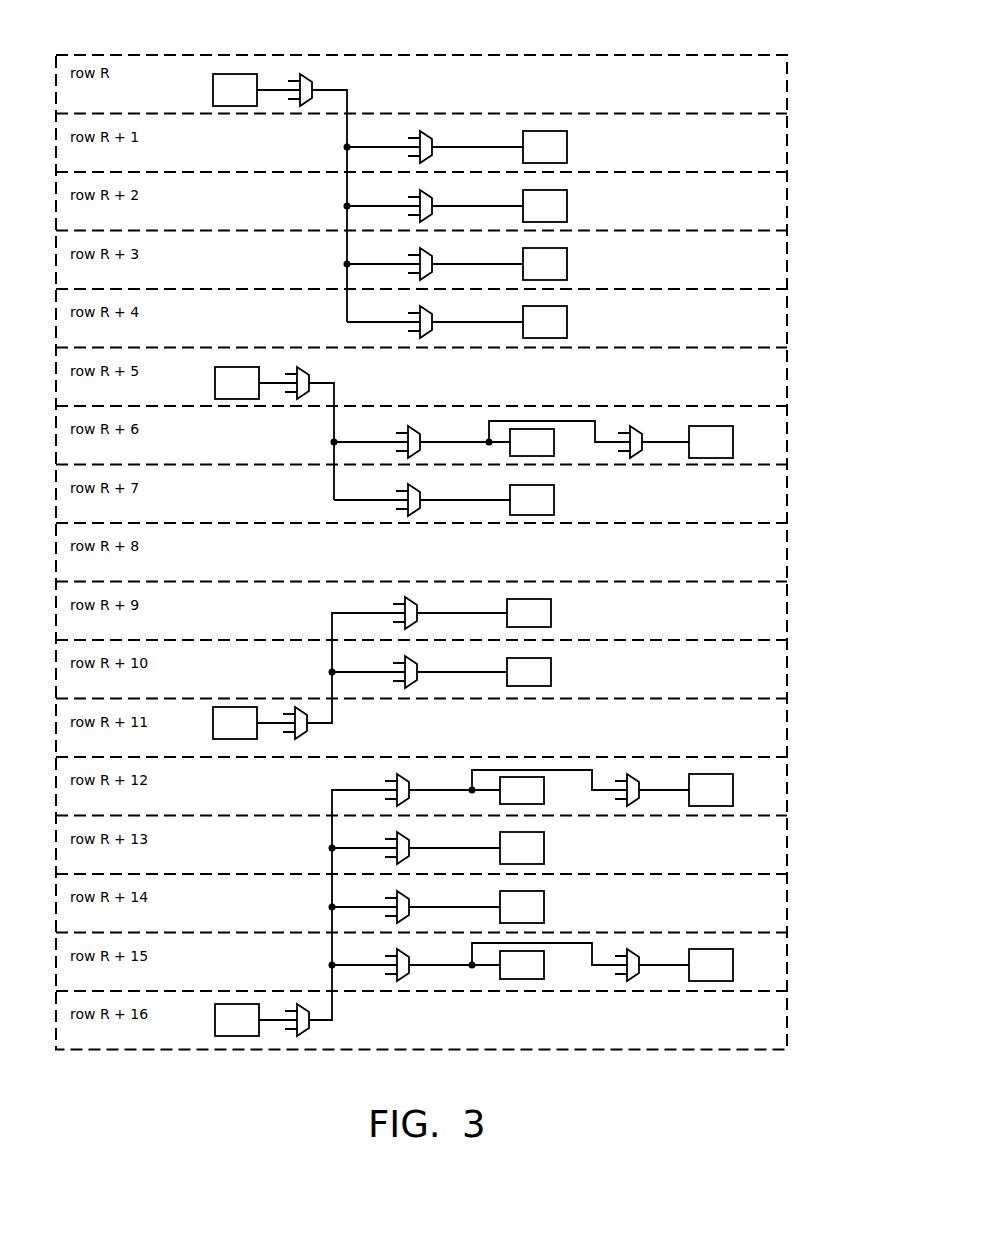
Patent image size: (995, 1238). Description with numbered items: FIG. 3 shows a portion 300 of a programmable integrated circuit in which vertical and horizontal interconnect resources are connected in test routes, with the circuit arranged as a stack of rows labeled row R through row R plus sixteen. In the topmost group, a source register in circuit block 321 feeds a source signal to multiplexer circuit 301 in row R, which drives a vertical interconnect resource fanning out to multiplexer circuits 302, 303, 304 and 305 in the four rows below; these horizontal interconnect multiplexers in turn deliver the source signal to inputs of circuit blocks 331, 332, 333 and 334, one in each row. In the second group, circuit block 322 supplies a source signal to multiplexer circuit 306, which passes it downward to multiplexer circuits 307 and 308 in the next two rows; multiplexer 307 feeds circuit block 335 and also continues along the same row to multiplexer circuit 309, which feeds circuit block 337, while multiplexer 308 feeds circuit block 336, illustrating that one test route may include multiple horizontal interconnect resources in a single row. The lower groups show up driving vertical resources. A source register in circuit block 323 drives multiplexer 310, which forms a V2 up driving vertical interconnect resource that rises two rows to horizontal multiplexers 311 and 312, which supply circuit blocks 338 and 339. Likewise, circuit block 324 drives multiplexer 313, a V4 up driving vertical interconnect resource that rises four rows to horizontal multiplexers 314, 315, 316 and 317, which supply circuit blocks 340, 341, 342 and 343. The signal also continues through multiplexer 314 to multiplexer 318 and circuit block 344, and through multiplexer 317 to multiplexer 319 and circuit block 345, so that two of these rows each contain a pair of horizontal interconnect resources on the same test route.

The portion of a programmable integrated circuit 300 is at (710, 54).
The multiplexer circuit 301 is at (305, 77).
The multiplexer circuit 302 is at (425, 134).
The multiplexer circuit 303 is at (425, 193).
The multiplexer circuit 304 is at (425, 251).
The multiplexer circuit 305 is at (425, 309).
The multiplexer circuit 306 is at (302, 370).
The multiplexer circuit 307 is at (413, 429).
The multiplexer circuit 308 is at (413, 487).
The multiplexer circuit 309 is at (635, 429).
The multiplexer 310 is at (303, 737).
The multiplexer 311 is at (410, 659).
The multiplexer 312 is at (410, 600).
The multiplexer 313 is at (305, 1034).
The multiplexer 314 is at (402, 952).
The multiplexer 315 is at (402, 894).
The multiplexer 316 is at (402, 835).
The multiplexer 317 is at (402, 777).
The multiplexer 318 is at (632, 952).
The multiplexer 319 is at (632, 777).
The circuit block 321 is at (213, 78).
The circuit block 322 is at (215, 371).
The circuit block 323 is at (213, 711).
The circuit block 324 is at (215, 1008).
The circuit block 331 is at (567, 137).
The circuit block 332 is at (567, 196).
The circuit block 333 is at (567, 254).
The circuit block 334 is at (567, 312).
The circuit block 335 is at (554, 432).
The circuit block 336 is at (554, 490).
The circuit block 337 is at (733, 432).
The circuit block 338 is at (551, 662).
The circuit block 339 is at (551, 603).
The circuit block 340 is at (544, 955).
The circuit block 341 is at (544, 897).
The circuit block 342 is at (544, 838).
The circuit block 343 is at (544, 780).
The circuit block 344 is at (733, 955).
The circuit block 345 is at (733, 780).